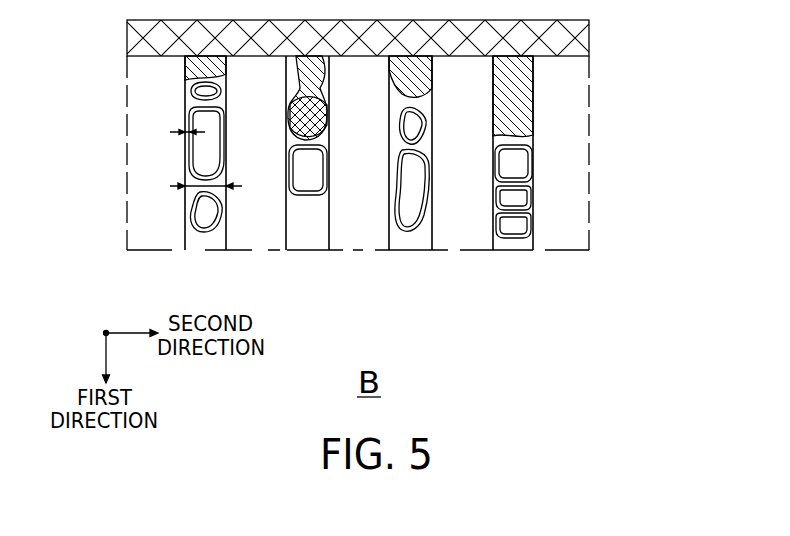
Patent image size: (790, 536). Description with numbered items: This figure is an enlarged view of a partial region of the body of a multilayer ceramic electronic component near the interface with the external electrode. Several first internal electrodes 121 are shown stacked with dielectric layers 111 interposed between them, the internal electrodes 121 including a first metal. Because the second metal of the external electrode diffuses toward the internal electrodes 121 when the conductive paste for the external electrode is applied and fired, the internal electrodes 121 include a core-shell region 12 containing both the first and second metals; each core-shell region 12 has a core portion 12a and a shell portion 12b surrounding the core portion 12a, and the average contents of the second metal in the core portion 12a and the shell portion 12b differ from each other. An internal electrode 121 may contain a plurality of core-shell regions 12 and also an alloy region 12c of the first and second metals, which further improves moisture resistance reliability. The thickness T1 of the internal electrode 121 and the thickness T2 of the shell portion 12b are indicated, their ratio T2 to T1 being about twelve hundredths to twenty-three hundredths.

The dielectric layer 111 is at (254, 250).
The first internal electrode 121 is at (412, 250).
The core-shell region 12 is at (591, 147).
The core portion 12a is at (518, 160).
The shell portion 12b is at (533, 185).
The alloy region 12c is at (523, 107).
The thickness of the internal electrode T1 is at (185, 183).
The thickness of the shell portion T2 is at (185, 128).